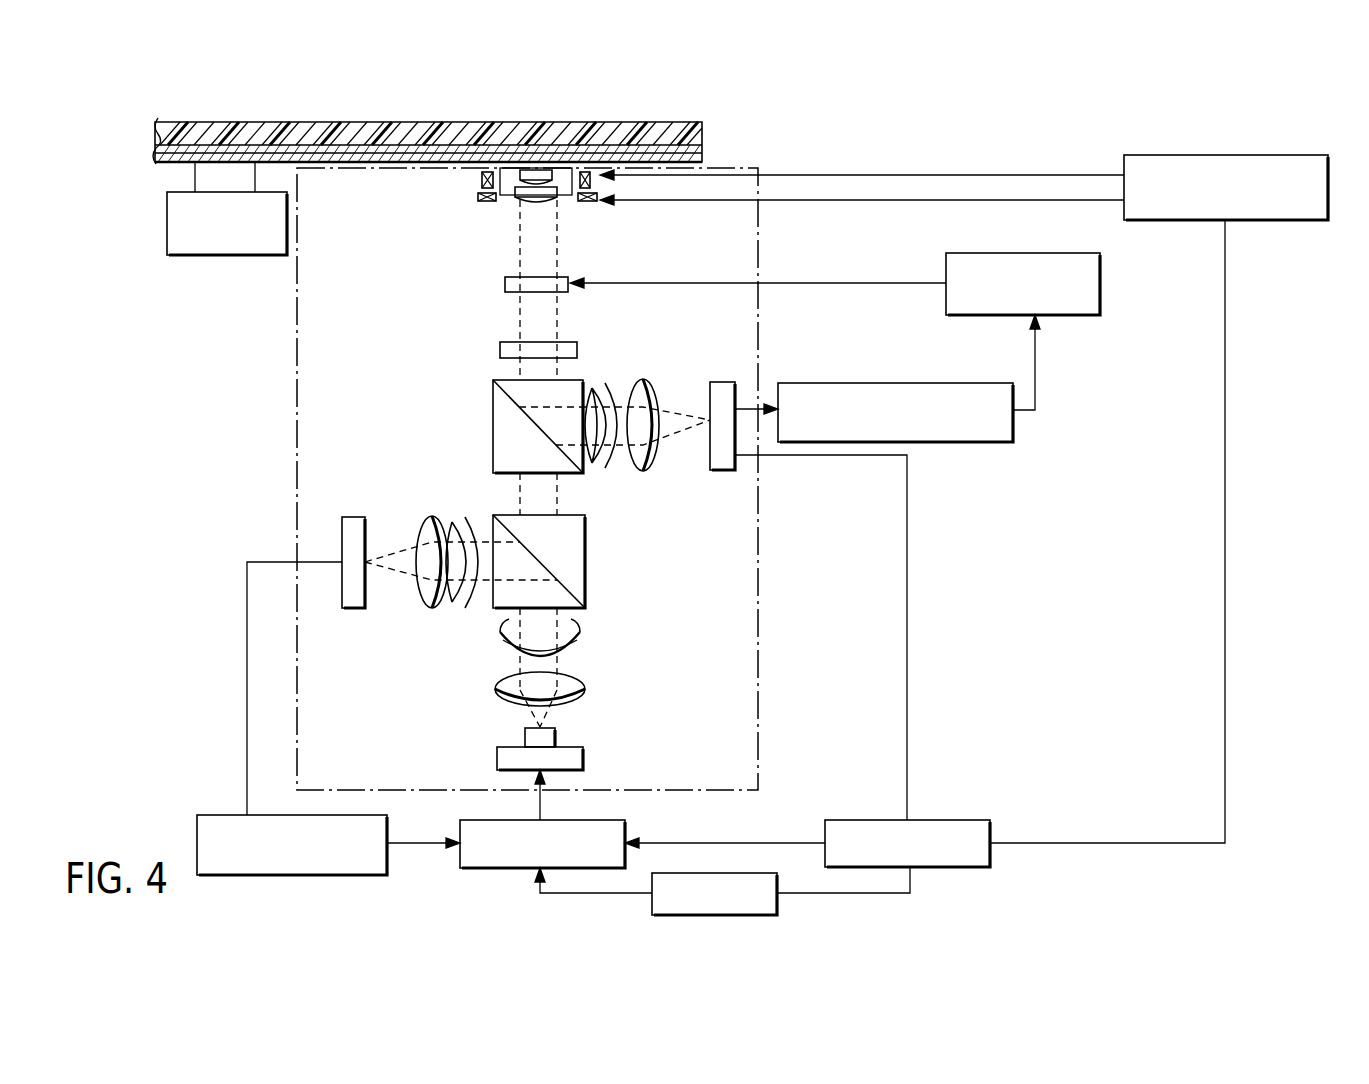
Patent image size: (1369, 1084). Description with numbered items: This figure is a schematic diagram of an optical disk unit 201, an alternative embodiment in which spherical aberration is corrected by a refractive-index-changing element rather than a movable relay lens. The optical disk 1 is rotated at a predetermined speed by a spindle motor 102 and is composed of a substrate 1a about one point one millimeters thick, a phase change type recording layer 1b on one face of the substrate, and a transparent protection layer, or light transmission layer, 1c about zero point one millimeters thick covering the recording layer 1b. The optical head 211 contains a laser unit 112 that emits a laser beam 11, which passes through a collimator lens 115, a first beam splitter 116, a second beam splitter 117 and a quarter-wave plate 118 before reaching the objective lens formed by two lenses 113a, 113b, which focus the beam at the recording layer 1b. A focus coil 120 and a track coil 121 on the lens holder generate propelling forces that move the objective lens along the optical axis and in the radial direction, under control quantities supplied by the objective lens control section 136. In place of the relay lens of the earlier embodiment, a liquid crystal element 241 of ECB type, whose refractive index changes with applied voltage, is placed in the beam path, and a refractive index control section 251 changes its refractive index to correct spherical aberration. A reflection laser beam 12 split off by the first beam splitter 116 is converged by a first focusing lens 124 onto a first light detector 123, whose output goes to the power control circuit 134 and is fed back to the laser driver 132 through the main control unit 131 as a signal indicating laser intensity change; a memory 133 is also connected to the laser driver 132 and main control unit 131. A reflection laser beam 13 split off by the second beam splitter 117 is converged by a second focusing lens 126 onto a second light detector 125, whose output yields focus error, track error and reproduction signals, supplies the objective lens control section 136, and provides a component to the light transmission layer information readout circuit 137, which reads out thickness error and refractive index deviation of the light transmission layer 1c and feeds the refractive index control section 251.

The optical disk 1 is at (338, 122).
The substrate 1a is at (575, 140).
The recording layer 1b is at (455, 145).
The transparent protection layer (light transmission layer) 1c is at (416, 164).
The laser beam 11 is at (580, 639).
The reflection laser beam 12 is at (461, 518).
The reflection laser beam 13 is at (600, 470).
The spindle motor 102 is at (230, 256).
The laser unit 112 is at (582, 754).
The lens 113a is at (592, 180).
The lens 113b is at (566, 195).
The collimator lens 115 is at (582, 688).
The first beam splitter 116 is at (586, 570).
The second beam splitter 117 is at (493, 419).
The λ/4 waveform plate 118 is at (500, 350).
The focus coil 120 is at (480, 184).
The track coil 121 is at (486, 203).
The first light detector 123 is at (352, 608).
The first focusing lens 124 is at (432, 608).
The second light detector 125 is at (723, 470).
The second focusing lens 126 is at (647, 472).
The main control unit 131 is at (952, 820).
The laser driver 132 is at (605, 820).
The memory 133 is at (770, 873).
The power control circuit 134 is at (387, 823).
The objective lens control section 136 is at (1188, 155).
The light transmission layer information readout circuit 137 is at (901, 383).
The optical disk unit 201 is at (923, 146).
The optical head 211 is at (297, 441).
The liquid crystal element 241 is at (505, 285).
The spherical aberration correction quantity control unit (refractive index control 251 is at (1100, 283).